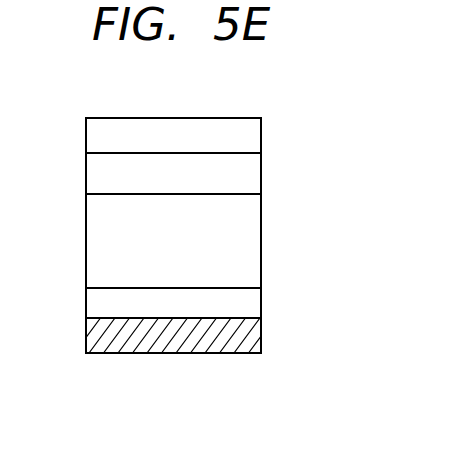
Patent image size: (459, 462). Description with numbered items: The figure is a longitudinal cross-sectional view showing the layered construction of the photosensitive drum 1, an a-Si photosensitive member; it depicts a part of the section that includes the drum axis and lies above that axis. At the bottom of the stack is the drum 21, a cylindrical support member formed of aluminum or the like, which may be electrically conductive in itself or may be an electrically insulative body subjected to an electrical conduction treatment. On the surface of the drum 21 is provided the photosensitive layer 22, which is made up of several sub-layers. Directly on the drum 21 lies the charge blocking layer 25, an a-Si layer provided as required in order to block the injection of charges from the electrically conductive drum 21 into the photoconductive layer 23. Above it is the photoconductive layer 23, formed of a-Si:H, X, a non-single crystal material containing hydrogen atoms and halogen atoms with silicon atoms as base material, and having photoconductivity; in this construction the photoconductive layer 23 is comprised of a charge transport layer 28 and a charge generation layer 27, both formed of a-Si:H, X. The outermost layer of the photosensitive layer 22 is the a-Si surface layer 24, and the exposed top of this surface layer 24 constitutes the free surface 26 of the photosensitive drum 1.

The photosensitive drum 1 is at (85, 207).
The drum 21 is at (90, 332).
The photosensitive layer 22 is at (353, 338).
The photoconductive layer 23 is at (310, 308).
The a-Si surface layer 24 is at (248, 128).
The charge blocking layer 25 is at (248, 308).
The free surface 26 is at (190, 118).
The charge generation layer 27 is at (248, 170).
The charge transport layer 28 is at (248, 245).